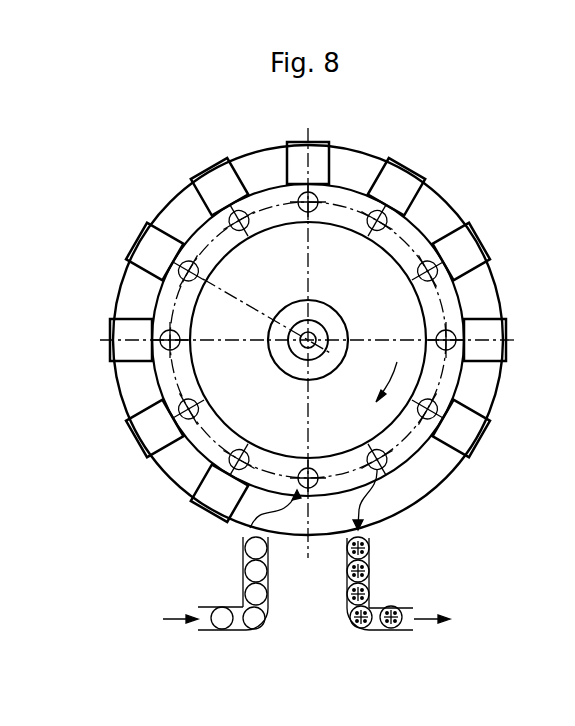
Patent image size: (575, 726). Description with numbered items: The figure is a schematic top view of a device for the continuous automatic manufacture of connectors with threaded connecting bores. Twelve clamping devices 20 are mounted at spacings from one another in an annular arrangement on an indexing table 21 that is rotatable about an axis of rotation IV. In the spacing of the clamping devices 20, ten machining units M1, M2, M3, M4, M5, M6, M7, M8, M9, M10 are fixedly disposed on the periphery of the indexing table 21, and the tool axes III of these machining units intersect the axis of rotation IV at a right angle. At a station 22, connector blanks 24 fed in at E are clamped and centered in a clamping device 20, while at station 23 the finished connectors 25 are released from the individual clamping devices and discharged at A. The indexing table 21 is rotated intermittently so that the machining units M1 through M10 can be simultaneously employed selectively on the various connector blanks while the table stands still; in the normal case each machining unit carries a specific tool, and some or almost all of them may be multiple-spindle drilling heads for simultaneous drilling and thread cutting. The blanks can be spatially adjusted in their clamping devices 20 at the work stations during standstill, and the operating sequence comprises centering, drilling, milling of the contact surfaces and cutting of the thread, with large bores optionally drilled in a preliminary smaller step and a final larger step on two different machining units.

The machining unit M1 is at (212, 494).
The machining unit M2 is at (147, 432).
The machining unit M3 is at (118, 333).
The machining unit M4 is at (148, 240).
The machining unit M5 is at (215, 176).
The machining unit M6 is at (317, 157).
The machining unit M7 is at (405, 182).
The machining unit M8 is at (472, 255).
The machining unit M9 is at (490, 350).
The machining unit M10 is at (457, 460).
The clamping device 20 is at (243, 452).
The indexing table 21 is at (397, 323).
The station 22 is at (308, 495).
The station 23 is at (402, 497).
The connector blank 24 is at (252, 629).
The finished connector 25 is at (389, 629).
The tool axis III is at (207, 508).
The axis of rotation IV is at (308, 340).
The feed point E is at (170, 620).
The discharge point A is at (442, 620).